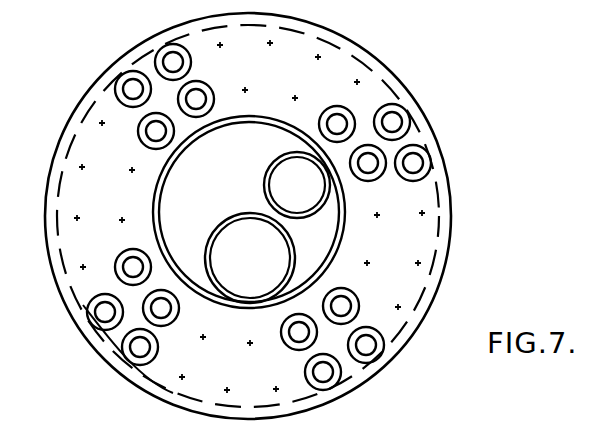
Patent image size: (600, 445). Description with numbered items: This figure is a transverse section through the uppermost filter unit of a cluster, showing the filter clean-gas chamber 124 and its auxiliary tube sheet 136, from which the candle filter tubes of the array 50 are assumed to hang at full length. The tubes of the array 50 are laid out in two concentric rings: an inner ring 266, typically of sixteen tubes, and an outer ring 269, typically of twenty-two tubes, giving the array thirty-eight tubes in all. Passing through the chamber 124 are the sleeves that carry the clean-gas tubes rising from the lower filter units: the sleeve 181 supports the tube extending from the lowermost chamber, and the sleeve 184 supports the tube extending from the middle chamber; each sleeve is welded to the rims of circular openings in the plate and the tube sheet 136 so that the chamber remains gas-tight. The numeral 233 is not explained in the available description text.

The filter clean-gas chamber 124 is at (524, 243).
The array of filter tubes 50 is at (131, 323).
The tube sheet 136 is at (167, 345).
The sleeve 181 is at (227, 218).
The sleeve 184 is at (273, 162).
The conductor pair 233 is at (362, 369).
The inner ring of filter tubes 266 is at (408, 140).
The outer ring of filter tubes 269 is at (358, 137).